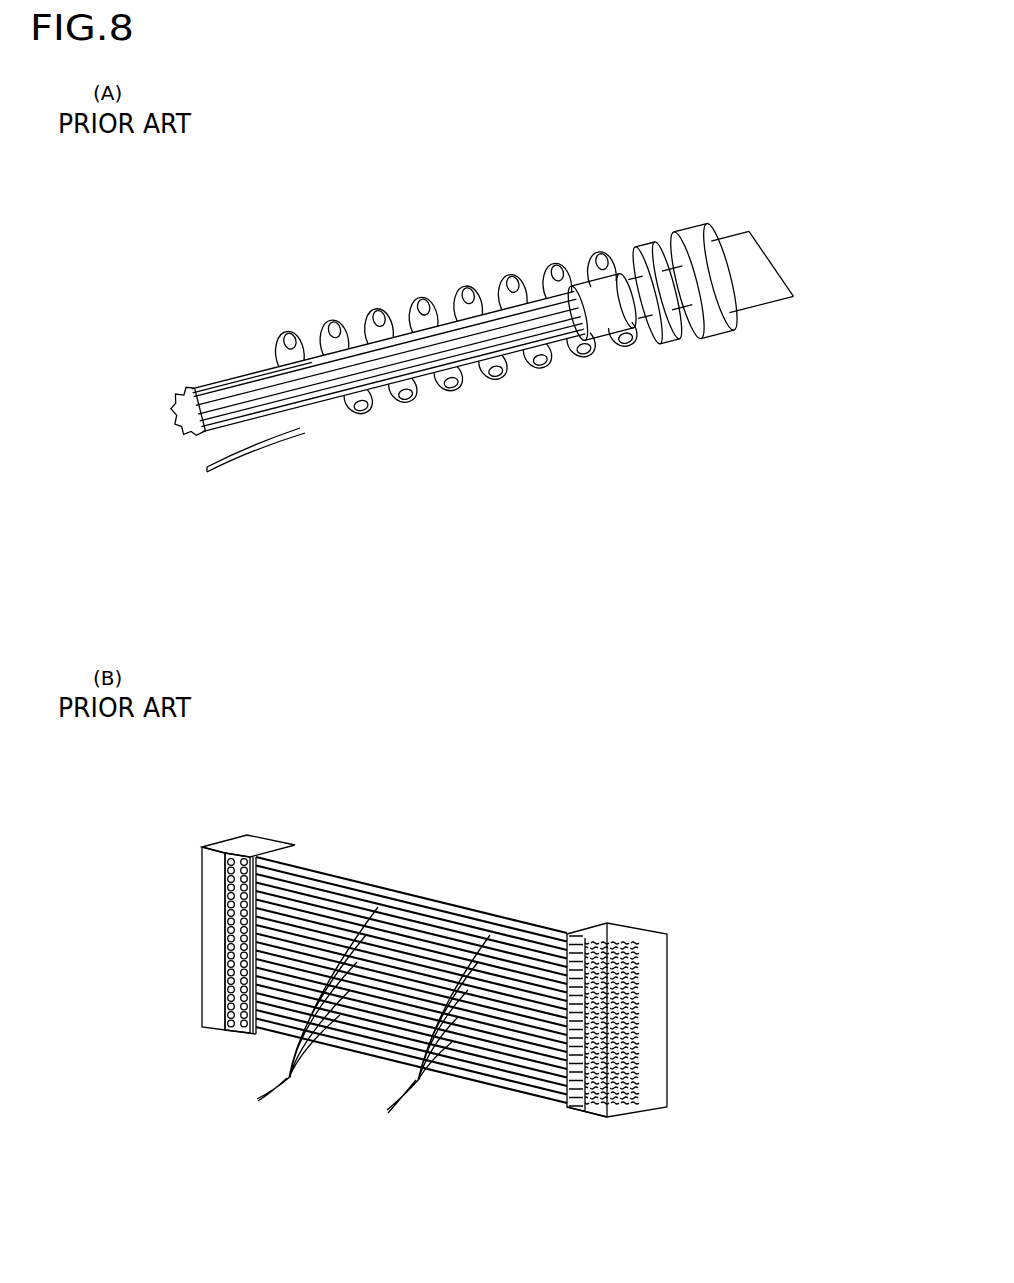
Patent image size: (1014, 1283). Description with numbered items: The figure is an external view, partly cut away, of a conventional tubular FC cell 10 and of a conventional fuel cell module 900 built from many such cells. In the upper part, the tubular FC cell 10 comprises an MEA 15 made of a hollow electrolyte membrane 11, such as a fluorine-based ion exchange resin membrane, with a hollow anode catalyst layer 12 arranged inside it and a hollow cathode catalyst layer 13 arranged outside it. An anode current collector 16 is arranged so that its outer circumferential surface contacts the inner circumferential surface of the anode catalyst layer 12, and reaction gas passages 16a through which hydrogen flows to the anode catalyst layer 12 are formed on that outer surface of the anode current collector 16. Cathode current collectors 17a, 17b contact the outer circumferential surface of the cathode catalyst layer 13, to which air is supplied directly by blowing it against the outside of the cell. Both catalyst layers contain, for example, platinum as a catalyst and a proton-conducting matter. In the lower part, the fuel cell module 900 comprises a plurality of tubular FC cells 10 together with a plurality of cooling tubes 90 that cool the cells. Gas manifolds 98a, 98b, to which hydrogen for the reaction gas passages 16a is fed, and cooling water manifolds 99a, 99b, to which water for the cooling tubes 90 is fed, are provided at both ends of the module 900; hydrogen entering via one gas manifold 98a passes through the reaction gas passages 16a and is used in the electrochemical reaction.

The tubular FC cell 10 is at (487, 171).
The electrolyte membrane 11 is at (643, 298).
The anode catalyst layer 12 is at (604, 303).
The cathode catalyst layer 13 is at (685, 293).
The MEA 15 is at (745, 433).
The anode current collector 16 is at (173, 416).
The reaction gas passage 16a is at (210, 409).
The cathode current collector 17a is at (487, 376).
The cathode current collector 17b is at (247, 443).
The cooling tube 90 is at (303, 1013).
The gas manifold 98a is at (287, 844).
The gas manifold 98b is at (620, 931).
The cooling water manifold 99a is at (257, 834).
The cooling water manifold 99b is at (648, 932).
The fuel cell module 900 is at (488, 756).